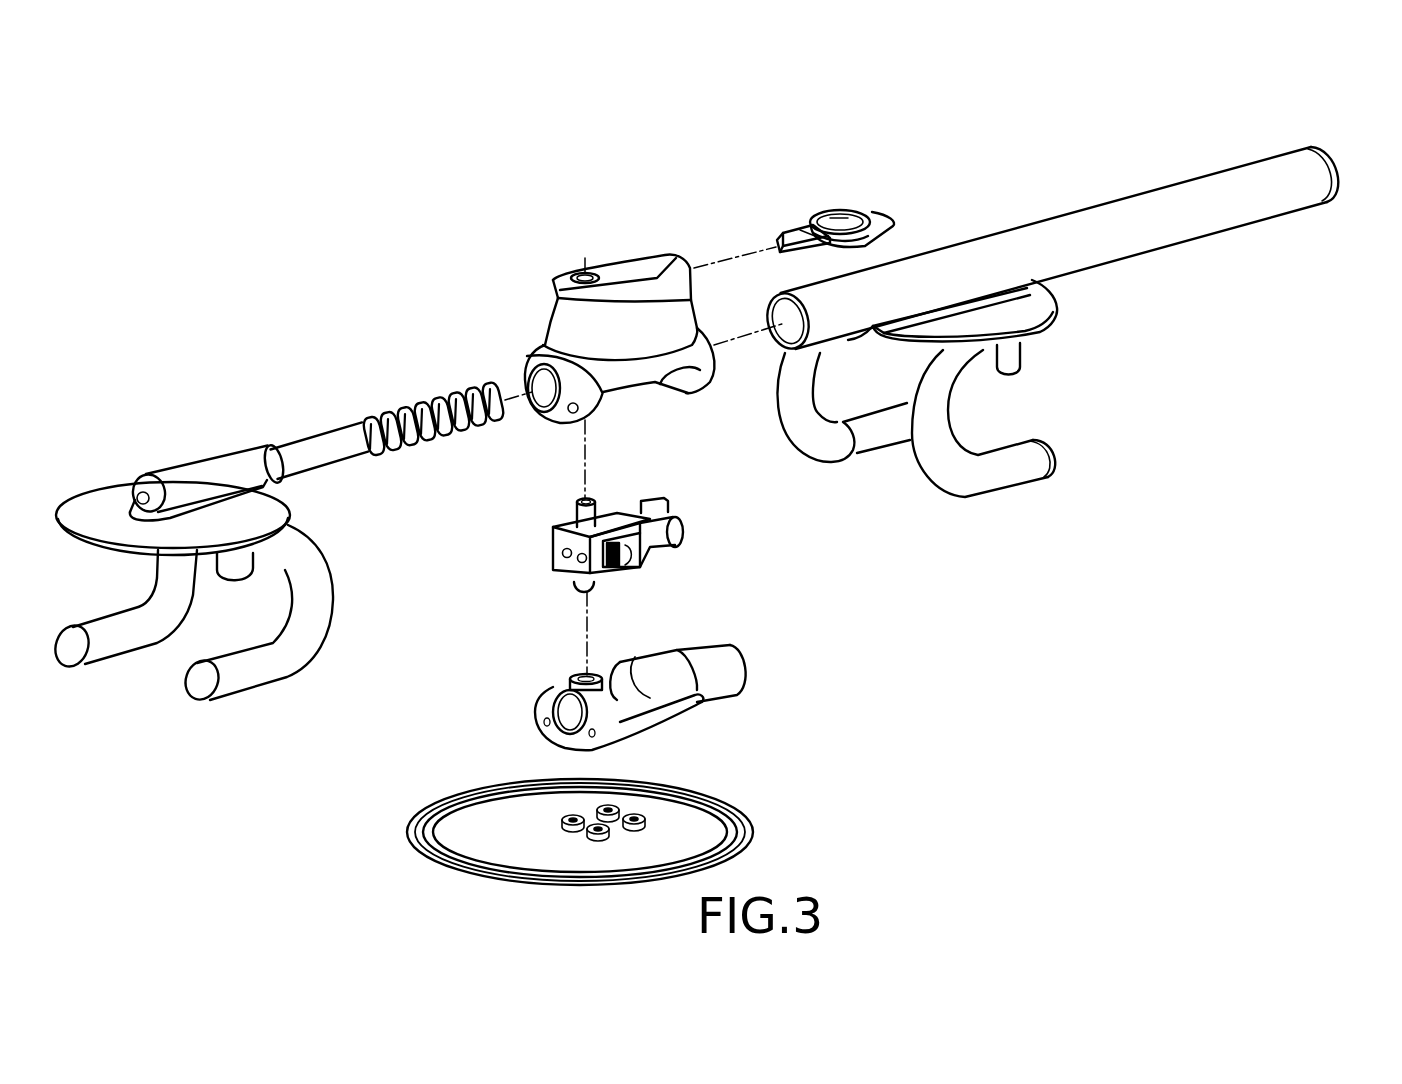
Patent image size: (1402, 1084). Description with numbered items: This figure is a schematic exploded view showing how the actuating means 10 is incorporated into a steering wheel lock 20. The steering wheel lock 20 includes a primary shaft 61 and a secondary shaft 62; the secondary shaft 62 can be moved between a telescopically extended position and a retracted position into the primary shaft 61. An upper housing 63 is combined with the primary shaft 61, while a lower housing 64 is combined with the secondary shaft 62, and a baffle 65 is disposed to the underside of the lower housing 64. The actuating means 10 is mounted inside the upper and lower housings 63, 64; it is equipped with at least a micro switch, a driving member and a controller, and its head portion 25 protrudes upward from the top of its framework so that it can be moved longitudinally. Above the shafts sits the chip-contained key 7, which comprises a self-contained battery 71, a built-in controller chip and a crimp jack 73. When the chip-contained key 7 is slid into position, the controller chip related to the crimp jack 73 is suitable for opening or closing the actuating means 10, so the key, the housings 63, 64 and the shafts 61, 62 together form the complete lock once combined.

The steering wheel lock 20 is at (655, 148).
The primary shaft 61 is at (346, 432).
The secondary shaft 62 is at (1068, 237).
The upper housing 63 is at (632, 272).
The lower housing 64 is at (683, 708).
The baffle 65 is at (697, 832).
The chip-contained key 7 is at (837, 190).
The self-contained battery 71 is at (866, 212).
The crimp jack 73 is at (776, 246).
The actuating means 10 is at (656, 540).
The head portion 25 is at (583, 513).